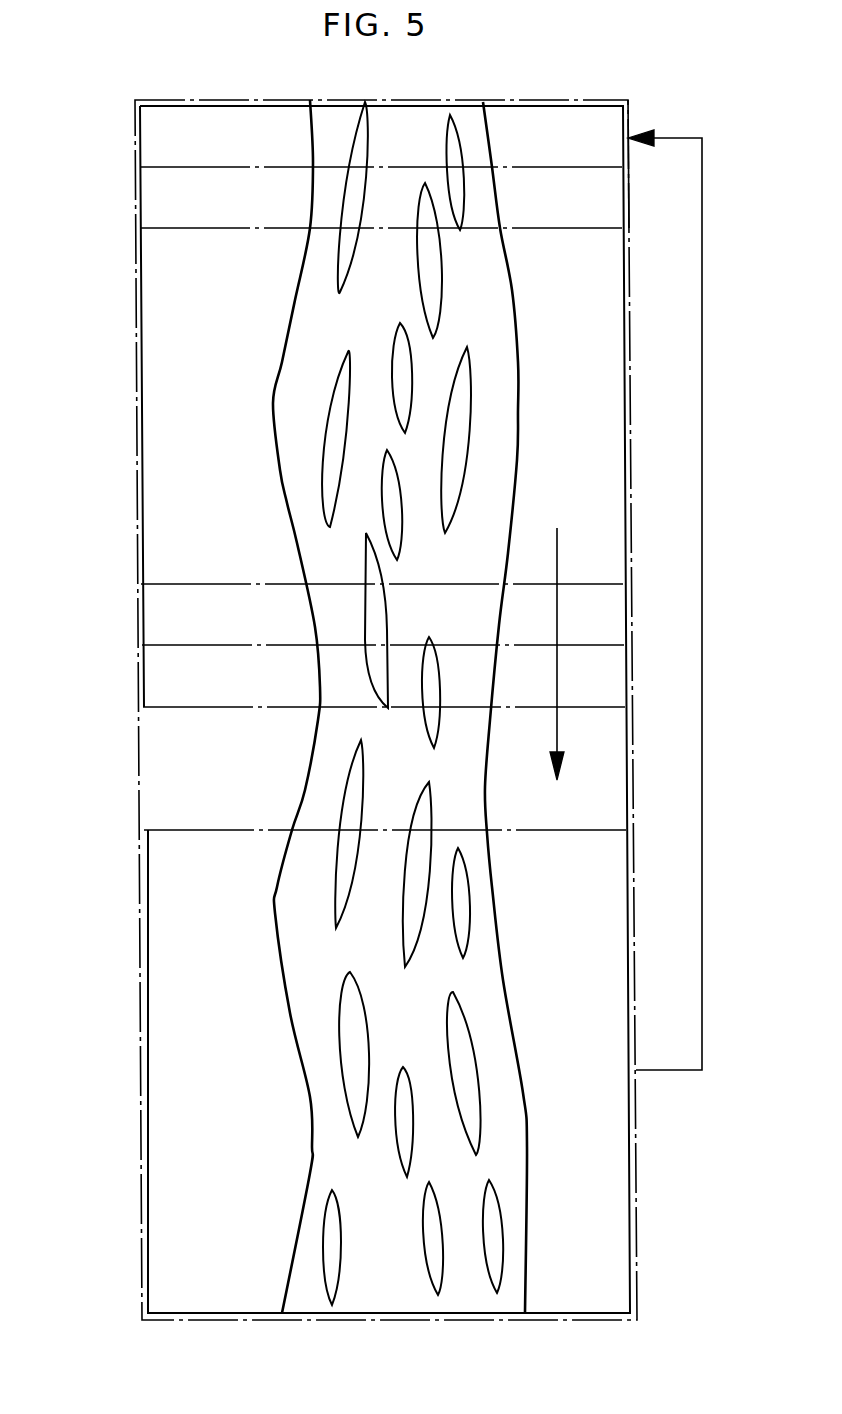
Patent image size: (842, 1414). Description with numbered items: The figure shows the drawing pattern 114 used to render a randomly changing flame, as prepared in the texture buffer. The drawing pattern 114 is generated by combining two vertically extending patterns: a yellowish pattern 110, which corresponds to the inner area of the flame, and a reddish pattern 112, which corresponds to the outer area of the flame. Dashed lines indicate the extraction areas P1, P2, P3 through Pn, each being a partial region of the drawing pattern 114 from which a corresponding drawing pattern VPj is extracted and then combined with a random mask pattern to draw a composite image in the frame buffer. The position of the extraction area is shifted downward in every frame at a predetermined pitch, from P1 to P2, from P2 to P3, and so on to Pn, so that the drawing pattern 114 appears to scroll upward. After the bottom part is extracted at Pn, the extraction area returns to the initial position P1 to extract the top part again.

The drawing pattern 114 is at (552, 115).
The reddish pattern 112 is at (168, 452).
The yellowish pattern 110 is at (333, 543).
The extraction area P1 is at (230, 98).
The extraction area P2 is at (168, 167).
The extraction area P3 is at (183, 229).
The extraction area Pn is at (637, 1150).